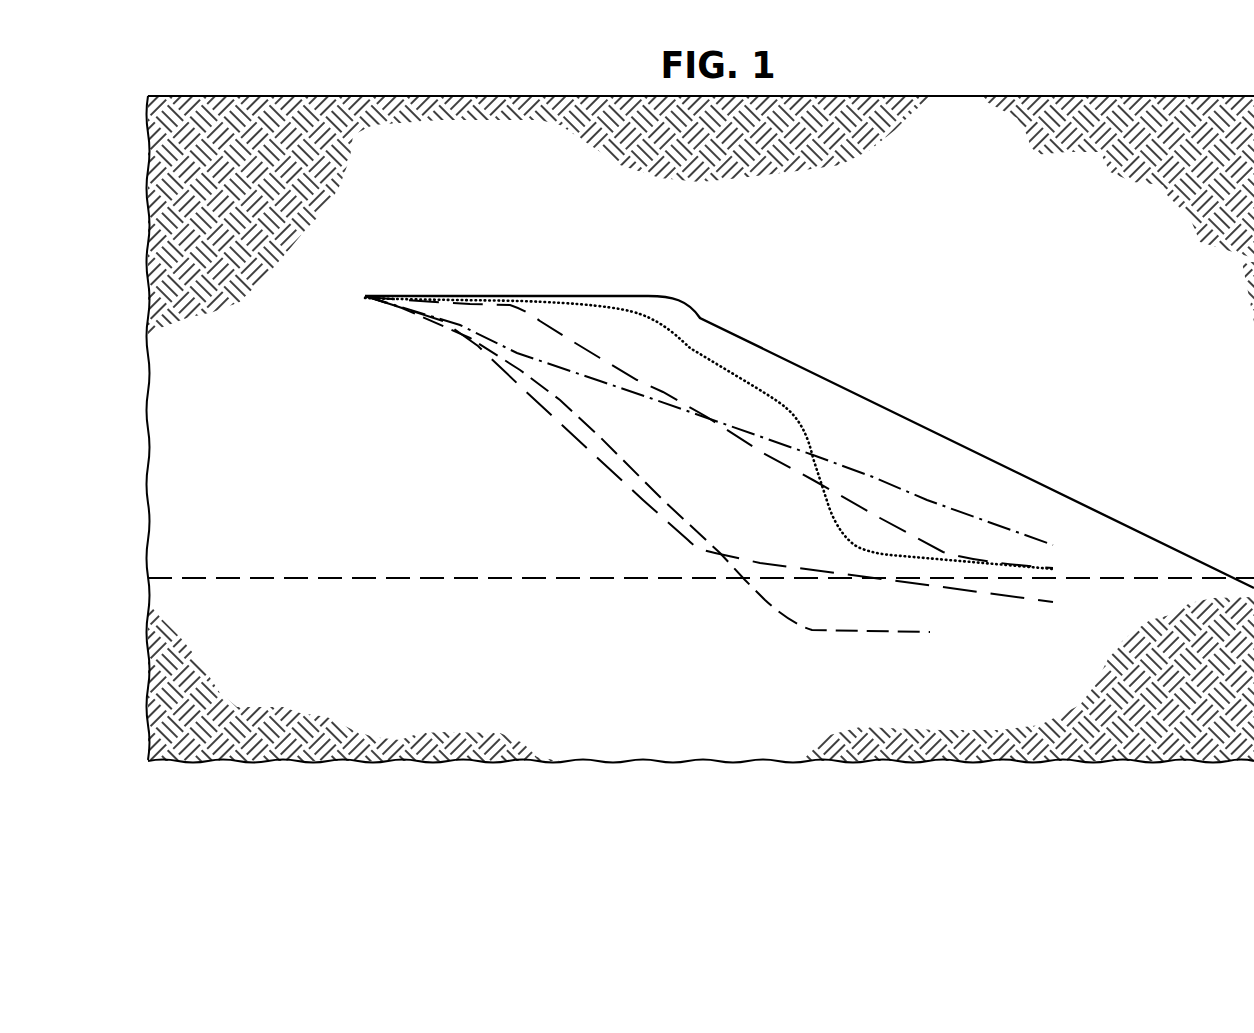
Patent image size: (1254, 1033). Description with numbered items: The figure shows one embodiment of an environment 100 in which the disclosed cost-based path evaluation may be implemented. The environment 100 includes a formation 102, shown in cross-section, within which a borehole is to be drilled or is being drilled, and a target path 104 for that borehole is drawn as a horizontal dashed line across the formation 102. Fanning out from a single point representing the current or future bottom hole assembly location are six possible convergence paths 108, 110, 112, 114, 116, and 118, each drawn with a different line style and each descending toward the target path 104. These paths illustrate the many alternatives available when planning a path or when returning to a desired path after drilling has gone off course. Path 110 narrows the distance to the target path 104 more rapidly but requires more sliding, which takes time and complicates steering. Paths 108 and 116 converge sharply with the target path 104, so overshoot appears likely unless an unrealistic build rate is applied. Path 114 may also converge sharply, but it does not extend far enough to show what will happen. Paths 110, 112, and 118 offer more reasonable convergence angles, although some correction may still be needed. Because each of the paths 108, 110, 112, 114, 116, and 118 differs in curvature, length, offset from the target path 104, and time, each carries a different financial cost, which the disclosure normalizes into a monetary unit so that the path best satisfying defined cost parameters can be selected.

The environment 100 is at (421, 56).
The formation 102 is at (290, 95).
The target path 104 is at (327, 580).
The path 108 is at (843, 388).
The path 110 is at (832, 516).
The path 112 is at (612, 352).
The path 114 is at (846, 471).
The path 116 is at (668, 501).
The path 118 is at (590, 451).